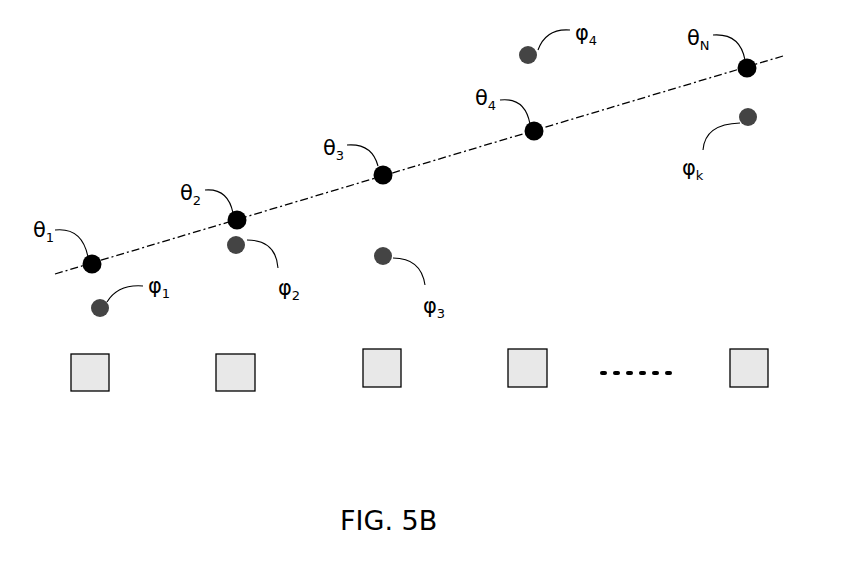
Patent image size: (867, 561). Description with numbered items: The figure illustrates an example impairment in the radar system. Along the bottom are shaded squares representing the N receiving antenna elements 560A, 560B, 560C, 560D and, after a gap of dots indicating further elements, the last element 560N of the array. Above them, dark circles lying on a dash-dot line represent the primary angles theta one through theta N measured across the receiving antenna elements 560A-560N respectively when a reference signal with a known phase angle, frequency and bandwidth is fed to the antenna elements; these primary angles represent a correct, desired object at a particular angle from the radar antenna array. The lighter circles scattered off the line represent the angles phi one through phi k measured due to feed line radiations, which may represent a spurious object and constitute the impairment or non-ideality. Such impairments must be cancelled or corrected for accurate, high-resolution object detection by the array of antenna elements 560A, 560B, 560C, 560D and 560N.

The receiving antenna element 560A is at (85, 391).
The receiving antenna element 560B is at (232, 385).
The receiving antenna element 560C is at (385, 380).
The receiving antenna element 560D is at (523, 380).
The receiving antenna element 560N is at (745, 380).